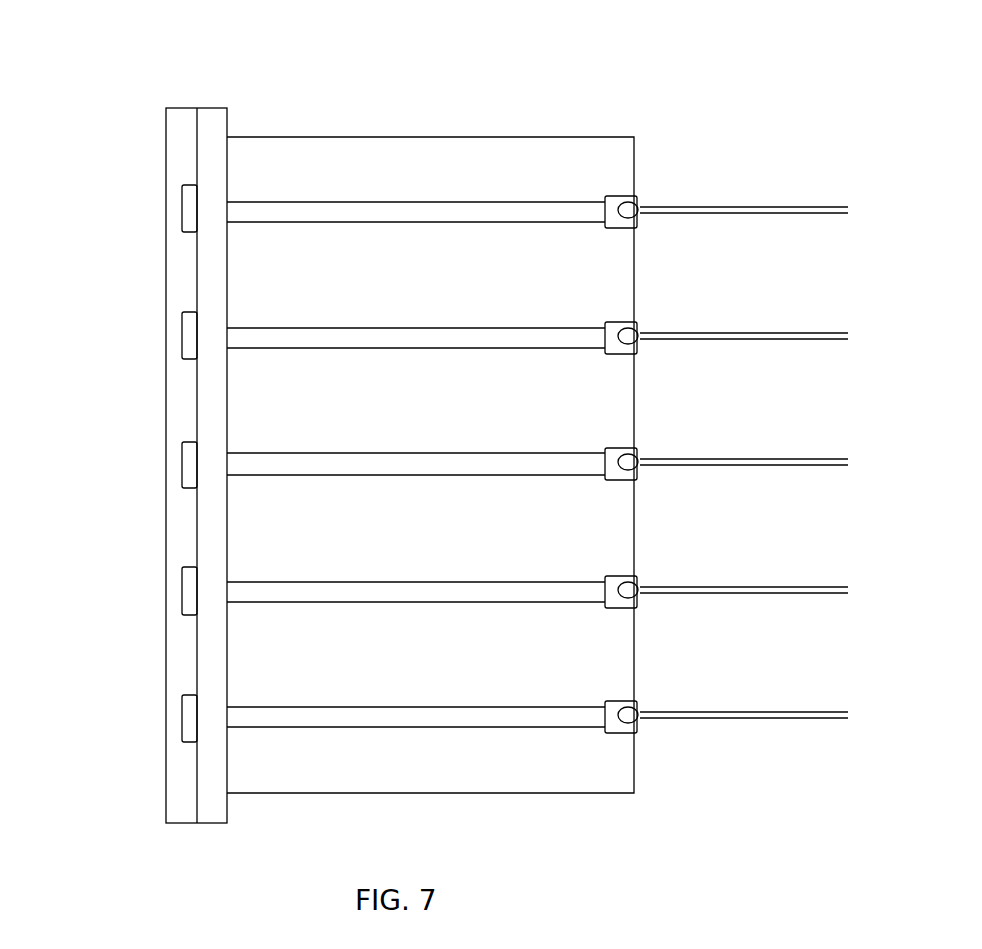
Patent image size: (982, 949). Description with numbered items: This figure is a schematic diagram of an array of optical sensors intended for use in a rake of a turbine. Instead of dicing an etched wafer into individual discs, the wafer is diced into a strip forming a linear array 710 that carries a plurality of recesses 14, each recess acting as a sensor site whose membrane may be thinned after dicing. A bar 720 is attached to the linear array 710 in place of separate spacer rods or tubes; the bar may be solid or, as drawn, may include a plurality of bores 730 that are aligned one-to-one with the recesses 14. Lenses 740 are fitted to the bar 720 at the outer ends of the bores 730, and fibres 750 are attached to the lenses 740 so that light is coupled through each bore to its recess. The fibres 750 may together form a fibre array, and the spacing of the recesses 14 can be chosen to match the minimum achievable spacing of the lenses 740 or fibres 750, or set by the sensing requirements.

The linear array 710 is at (199, 84).
The recesses 14 is at (188, 203).
The bar 720 is at (443, 167).
The bores 730 is at (522, 210).
The lenses 740 is at (630, 210).
The fibres 750 is at (747, 210).